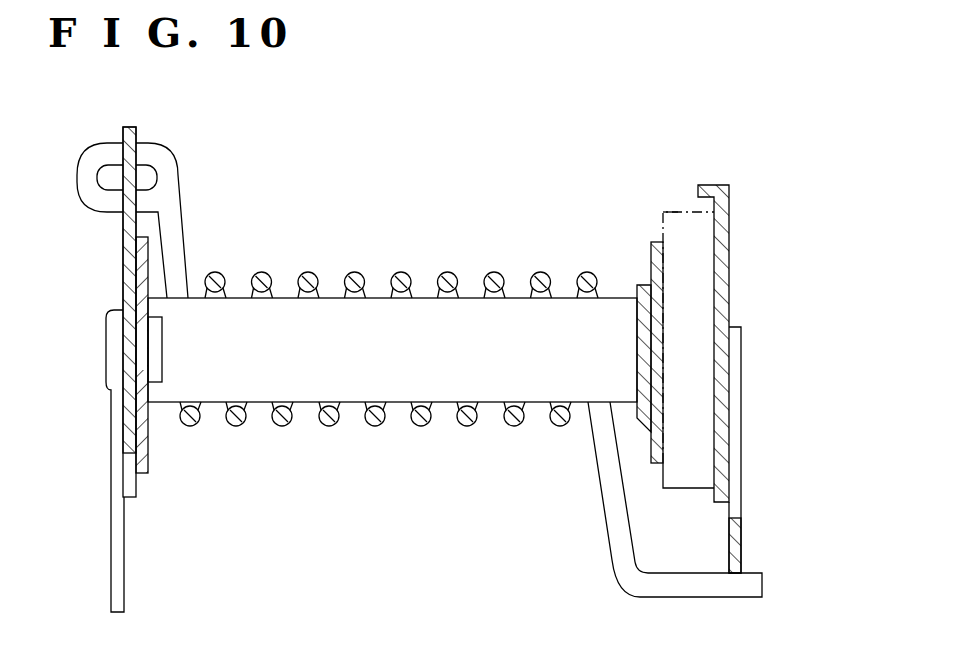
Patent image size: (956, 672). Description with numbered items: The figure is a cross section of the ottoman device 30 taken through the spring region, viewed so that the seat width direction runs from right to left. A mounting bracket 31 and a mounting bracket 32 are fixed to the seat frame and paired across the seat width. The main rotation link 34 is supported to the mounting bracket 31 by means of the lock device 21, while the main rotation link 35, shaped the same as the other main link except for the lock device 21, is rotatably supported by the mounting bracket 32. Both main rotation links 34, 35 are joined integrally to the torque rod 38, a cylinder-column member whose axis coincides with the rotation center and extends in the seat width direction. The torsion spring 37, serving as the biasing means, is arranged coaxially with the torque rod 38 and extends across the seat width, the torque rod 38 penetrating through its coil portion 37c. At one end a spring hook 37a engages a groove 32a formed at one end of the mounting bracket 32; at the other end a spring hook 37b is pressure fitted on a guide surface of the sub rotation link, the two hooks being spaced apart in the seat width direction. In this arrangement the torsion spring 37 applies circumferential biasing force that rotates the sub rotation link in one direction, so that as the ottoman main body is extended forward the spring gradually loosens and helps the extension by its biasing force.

The lock device 21 is at (673, 212).
The ottoman device 30 is at (535, 159).
The mounting bracket 31 is at (729, 240).
The mounting bracket 32 is at (123, 259).
The groove 32a is at (118, 173).
The main rotation link 34 is at (651, 255).
The main rotation link 35 is at (148, 452).
The torsion spring 37 is at (308, 272).
The spring hook 37a is at (90, 147).
The spring hook 37b is at (762, 585).
The coil portion 37c is at (493, 272).
The torque rod 38 is at (425, 298).